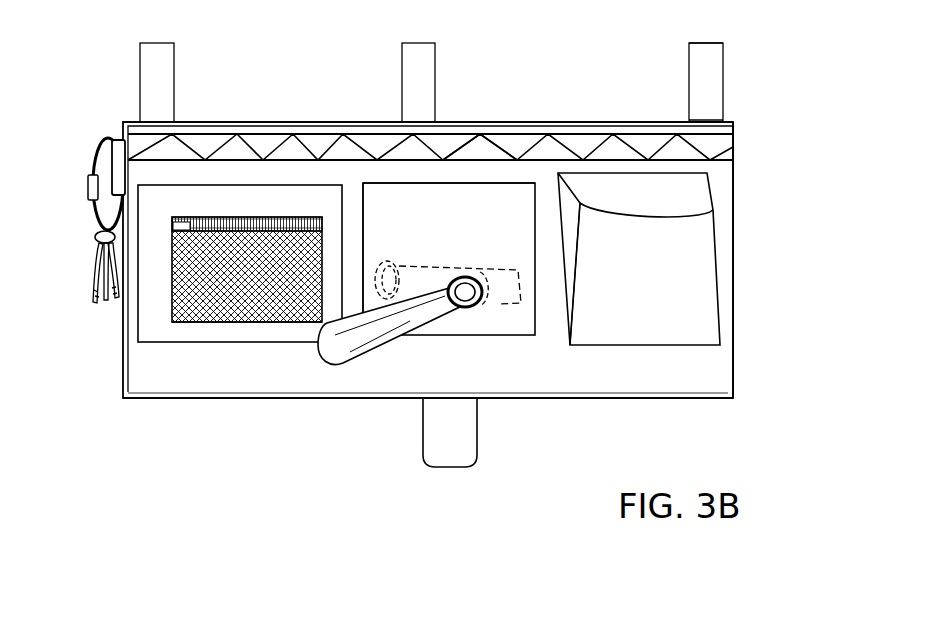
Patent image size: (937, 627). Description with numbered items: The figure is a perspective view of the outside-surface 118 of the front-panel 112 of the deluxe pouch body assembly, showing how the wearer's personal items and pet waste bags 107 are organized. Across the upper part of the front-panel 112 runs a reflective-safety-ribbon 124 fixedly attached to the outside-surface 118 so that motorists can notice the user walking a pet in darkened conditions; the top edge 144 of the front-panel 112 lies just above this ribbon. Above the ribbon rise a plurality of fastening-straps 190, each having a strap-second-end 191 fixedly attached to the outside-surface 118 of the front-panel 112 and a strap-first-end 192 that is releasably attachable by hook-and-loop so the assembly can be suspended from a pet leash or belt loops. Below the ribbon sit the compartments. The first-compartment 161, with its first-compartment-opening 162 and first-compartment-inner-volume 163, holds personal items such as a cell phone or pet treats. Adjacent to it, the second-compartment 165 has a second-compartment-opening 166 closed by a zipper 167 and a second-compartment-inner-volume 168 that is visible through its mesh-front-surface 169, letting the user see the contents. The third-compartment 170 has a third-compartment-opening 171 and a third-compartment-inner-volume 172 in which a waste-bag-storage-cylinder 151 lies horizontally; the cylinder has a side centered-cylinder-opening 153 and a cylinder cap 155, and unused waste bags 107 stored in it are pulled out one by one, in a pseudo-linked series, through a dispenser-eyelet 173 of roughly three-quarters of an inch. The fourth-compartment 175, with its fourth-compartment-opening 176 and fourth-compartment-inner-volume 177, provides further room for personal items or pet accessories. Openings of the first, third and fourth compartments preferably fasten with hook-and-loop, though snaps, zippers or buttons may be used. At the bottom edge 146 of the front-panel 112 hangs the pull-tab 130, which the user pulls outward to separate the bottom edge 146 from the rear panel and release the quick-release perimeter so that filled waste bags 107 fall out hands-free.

The waste bags 107 is at (342, 368).
The front-panel 112 is at (625, 374).
The outside-surface 118 is at (688, 384).
The reflective-safety-ribbon 124 is at (729, 150).
The pull-tab 130 is at (438, 469).
The top wall 144 is at (588, 117).
The bottom edge 146 is at (714, 407).
The waste-bag-storage-cylinder 151 is at (509, 295).
The side centered-cylinder-opening 153 is at (489, 300).
The cylinder cap 155 is at (513, 150).
The first-compartment 161 is at (260, 205).
The first-compartment-opening 162 is at (152, 182).
The first-compartment-inner-volume 163 is at (277, 210).
The second-compartment 165 is at (168, 312).
The second-compartment-opening 166 is at (173, 220).
The zipper 167 is at (176, 236).
The second-compartment-inner-volume 168 is at (236, 314).
The mesh-front-surface 169 is at (298, 314).
The third-compartment 170 is at (417, 200).
The third-compartment-opening 171 is at (367, 177).
The third-compartment-inner-volume 172 is at (393, 177).
The dispenser-eyelet 173 is at (465, 312).
The fourth-compartment 175 is at (715, 223).
The fourth-compartment-opening 176 is at (714, 182).
The fourth-compartment-inner-volume 177 is at (699, 266).
The fastening-straps 190 is at (726, 78).
The strap-second-end 191 is at (726, 120).
The strap-first-end 192 is at (726, 42).